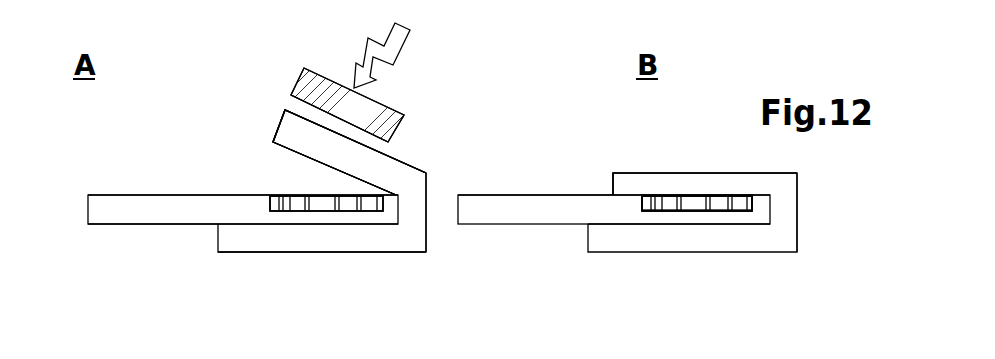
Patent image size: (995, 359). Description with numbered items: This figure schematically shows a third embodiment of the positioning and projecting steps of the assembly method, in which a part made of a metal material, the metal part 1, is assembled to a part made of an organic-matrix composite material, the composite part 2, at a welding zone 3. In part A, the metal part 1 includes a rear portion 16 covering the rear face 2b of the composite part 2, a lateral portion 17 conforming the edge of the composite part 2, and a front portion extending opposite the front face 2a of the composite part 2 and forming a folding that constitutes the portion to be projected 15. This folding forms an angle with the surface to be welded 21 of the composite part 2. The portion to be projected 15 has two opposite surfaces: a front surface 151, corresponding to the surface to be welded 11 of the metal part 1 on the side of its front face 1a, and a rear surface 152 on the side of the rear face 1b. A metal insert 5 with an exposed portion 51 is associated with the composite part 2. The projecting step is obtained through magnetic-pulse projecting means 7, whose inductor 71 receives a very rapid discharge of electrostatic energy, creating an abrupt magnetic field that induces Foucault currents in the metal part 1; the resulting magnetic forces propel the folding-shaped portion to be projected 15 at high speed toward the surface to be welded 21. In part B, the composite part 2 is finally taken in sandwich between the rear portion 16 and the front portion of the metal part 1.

The metal part 1 is at (227, 237).
The front face 1a is at (262, 165).
The rear face 1b is at (411, 266).
The composite part 2 is at (117, 202).
The front face 2a is at (160, 212).
The rear face 2b is at (89, 241).
The welding zone 3 is at (734, 263).
The metal insert 5 is at (300, 193).
The magnetic-pulse projecting means 7 is at (390, 108).
The inductor 71 is at (380, 102).
The surface to be welded 11 is at (762, 292).
The portion to be projected 15 is at (290, 128).
The rear portion 16 is at (256, 245).
The lateral portion 17 is at (428, 235).
The surface to be welded 21 is at (521, 263).
The exposed portion 51 is at (350, 225).
The front surface 151 is at (294, 152).
The rear surface 152 is at (318, 100).